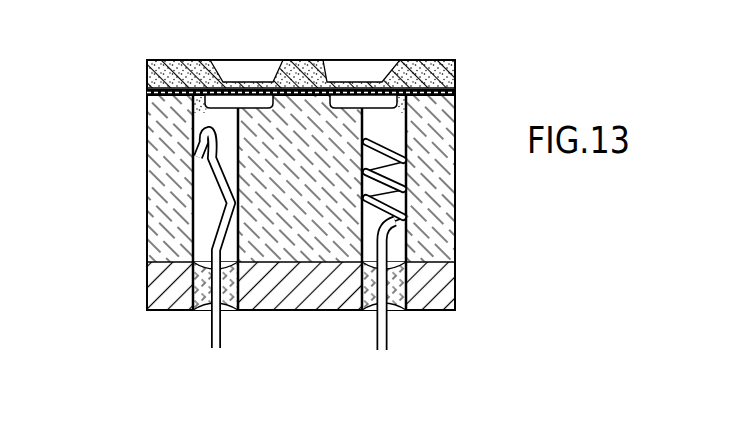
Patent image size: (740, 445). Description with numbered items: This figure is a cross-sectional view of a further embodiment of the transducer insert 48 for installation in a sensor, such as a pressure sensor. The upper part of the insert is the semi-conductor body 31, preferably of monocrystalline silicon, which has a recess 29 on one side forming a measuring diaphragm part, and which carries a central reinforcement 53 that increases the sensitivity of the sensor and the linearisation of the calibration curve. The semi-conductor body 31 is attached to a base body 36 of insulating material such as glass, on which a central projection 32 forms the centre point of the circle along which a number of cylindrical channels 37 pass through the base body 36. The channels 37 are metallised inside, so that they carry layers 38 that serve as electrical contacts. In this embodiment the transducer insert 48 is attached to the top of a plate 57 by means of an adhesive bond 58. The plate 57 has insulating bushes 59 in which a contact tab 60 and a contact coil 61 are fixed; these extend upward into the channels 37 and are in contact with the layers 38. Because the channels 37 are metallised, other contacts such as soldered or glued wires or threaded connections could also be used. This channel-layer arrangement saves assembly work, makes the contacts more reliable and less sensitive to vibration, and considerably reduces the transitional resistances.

The transducer insert 48 is at (138, 93).
The semi-conductor body 31 is at (321, 55).
The central reinforcement 53 is at (295, 78).
The central projection 32 is at (327, 78).
The recess 29 is at (368, 78).
The base body 36 is at (448, 113).
The layers 38 is at (200, 212).
The cylindrical channels 37 is at (193, 190).
The contact tabs 60 is at (195, 157).
The contact coils 61 is at (408, 205).
The adhesive bond 58 is at (455, 250).
The plate 57 is at (440, 285).
The insulating bushes 59 is at (195, 280).